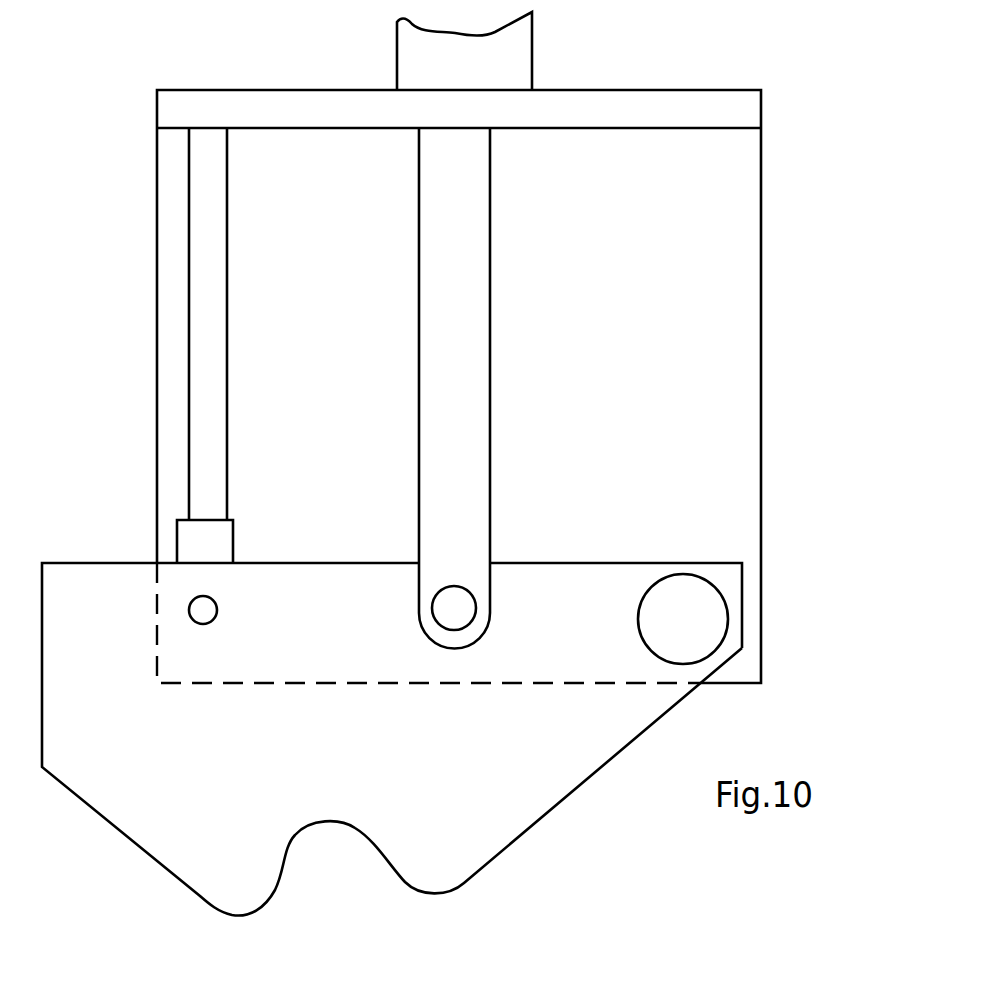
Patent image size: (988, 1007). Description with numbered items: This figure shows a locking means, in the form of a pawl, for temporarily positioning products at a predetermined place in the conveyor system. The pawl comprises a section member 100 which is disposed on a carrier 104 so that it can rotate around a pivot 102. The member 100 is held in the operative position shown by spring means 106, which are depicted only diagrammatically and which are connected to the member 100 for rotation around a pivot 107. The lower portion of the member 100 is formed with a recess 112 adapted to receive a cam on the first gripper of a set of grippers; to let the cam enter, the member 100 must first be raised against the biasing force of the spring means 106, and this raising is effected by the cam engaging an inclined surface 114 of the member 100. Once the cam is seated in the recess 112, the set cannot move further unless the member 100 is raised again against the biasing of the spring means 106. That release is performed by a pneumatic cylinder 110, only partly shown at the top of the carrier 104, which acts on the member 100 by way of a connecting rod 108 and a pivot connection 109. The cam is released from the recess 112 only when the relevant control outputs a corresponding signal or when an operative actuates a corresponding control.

The section member 100 is at (557, 775).
The pivot 102 is at (683, 590).
The carrier 104 is at (724, 478).
The spring means 106 is at (213, 362).
The pivot 107 is at (214, 621).
The connecting rod 108 is at (477, 354).
The pivot connection 109 is at (458, 606).
The pneumatic cylinder 110 is at (512, 55).
The recess 112 is at (345, 877).
The surface 114 is at (542, 830).